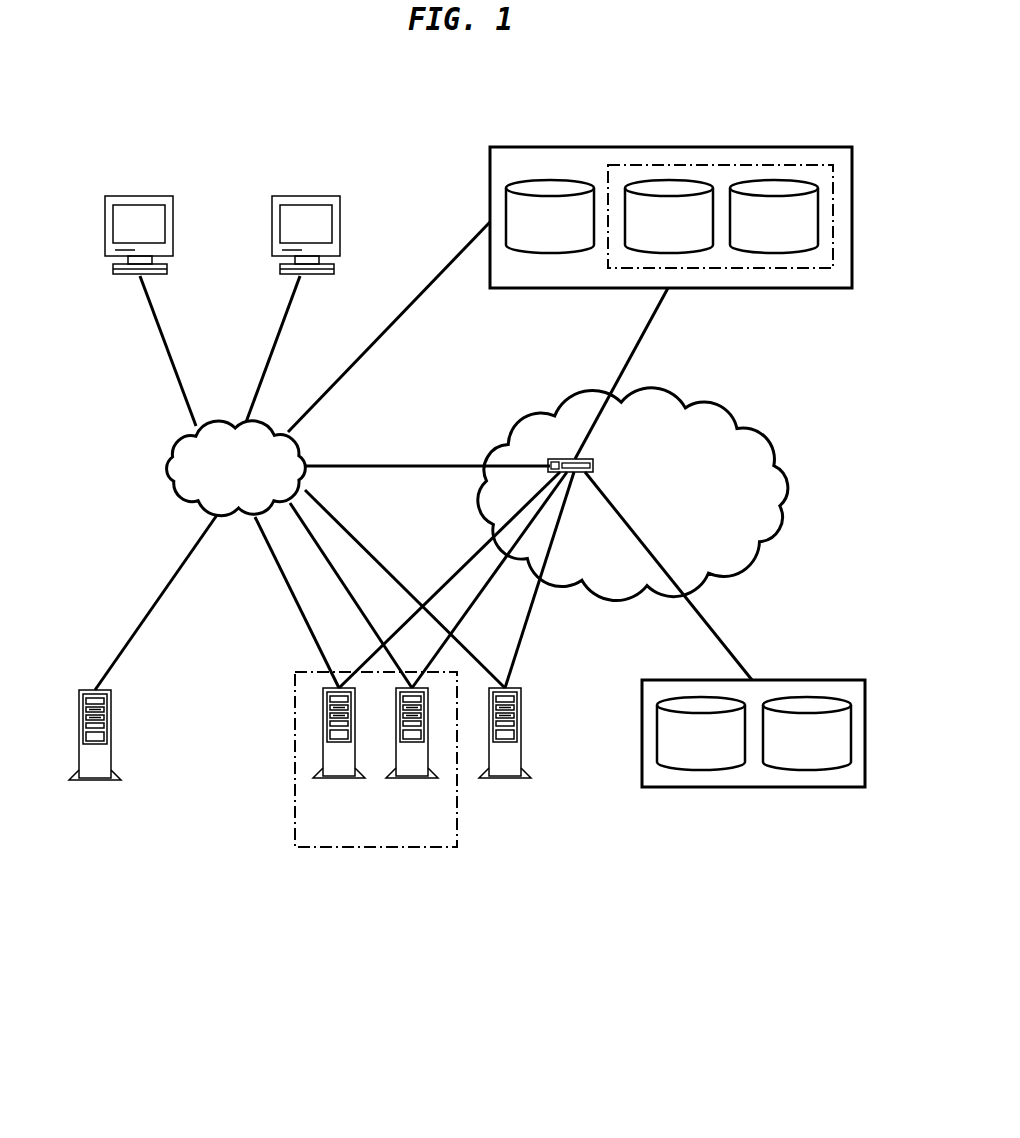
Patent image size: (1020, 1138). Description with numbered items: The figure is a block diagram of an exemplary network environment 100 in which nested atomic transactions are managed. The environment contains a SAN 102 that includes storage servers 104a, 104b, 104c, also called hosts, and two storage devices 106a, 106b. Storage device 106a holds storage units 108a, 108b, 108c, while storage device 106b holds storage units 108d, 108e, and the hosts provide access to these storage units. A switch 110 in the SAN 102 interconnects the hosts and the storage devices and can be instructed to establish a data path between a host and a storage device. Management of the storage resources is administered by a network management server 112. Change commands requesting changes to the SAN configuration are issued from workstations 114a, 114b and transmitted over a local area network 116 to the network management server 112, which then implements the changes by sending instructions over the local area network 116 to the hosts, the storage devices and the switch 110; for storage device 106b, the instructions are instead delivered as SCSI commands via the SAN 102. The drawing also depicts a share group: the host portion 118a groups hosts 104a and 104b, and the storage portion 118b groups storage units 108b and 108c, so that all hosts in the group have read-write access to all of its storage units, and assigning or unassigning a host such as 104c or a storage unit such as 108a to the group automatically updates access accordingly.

The network environment 100 is at (278, 931).
The SAN 102 is at (792, 485).
The storage server 104a is at (338, 780).
The storage server 104b is at (411, 780).
The storage server 104c is at (521, 730).
The storage device 106a is at (767, 147).
The storage device 106b is at (803, 680).
The storage unit 108a is at (550, 216).
The storage unit 108b is at (669, 216).
The storage unit 108c is at (774, 216).
The storage unit 108d is at (701, 733).
The storage unit 108e is at (807, 733).
The switch 110 is at (590, 459).
The network management server 112 is at (112, 733).
The workstation 114a is at (173, 230).
The workstation 114b is at (340, 230).
The local area network 116 is at (163, 462).
The share group 118a is at (295, 745).
The share group 118b is at (775, 268).